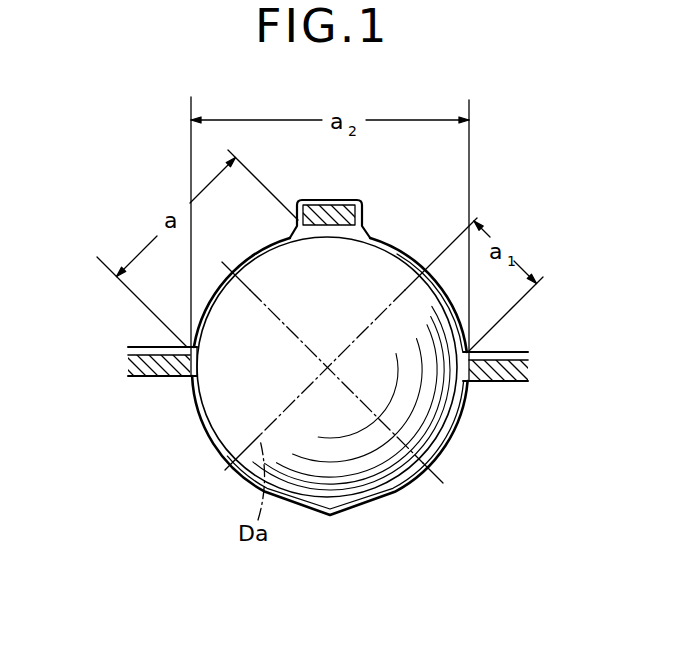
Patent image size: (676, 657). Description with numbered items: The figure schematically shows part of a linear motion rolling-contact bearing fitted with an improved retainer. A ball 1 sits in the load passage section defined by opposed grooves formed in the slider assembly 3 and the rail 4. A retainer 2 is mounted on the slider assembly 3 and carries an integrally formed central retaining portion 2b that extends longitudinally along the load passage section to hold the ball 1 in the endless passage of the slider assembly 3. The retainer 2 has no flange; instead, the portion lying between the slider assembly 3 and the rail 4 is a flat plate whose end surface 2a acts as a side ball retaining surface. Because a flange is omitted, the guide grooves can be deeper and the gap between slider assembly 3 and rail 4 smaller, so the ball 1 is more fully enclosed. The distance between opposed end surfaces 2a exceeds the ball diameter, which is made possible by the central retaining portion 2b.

The ball 1 is at (225, 408).
The retainer 2 is at (512, 348).
The end surface 2a is at (465, 383).
The central retaining portion 2b is at (347, 210).
The slider assembly 3 is at (432, 503).
The rail 4 is at (443, 225).